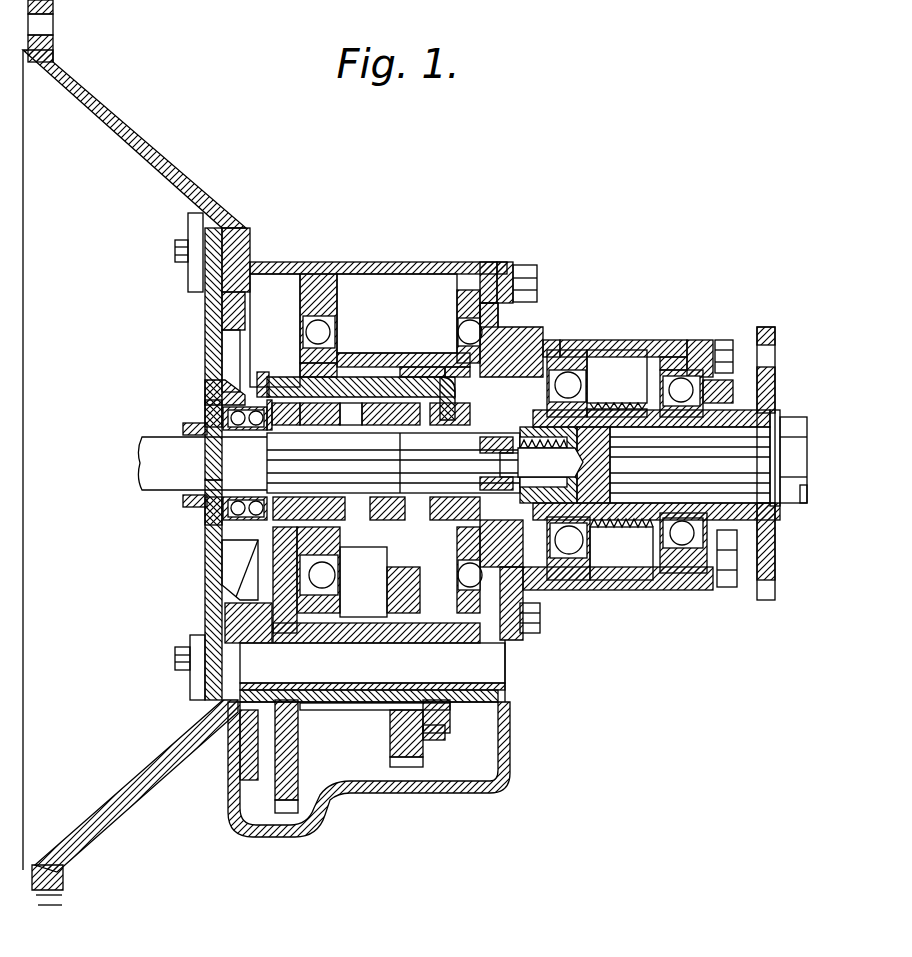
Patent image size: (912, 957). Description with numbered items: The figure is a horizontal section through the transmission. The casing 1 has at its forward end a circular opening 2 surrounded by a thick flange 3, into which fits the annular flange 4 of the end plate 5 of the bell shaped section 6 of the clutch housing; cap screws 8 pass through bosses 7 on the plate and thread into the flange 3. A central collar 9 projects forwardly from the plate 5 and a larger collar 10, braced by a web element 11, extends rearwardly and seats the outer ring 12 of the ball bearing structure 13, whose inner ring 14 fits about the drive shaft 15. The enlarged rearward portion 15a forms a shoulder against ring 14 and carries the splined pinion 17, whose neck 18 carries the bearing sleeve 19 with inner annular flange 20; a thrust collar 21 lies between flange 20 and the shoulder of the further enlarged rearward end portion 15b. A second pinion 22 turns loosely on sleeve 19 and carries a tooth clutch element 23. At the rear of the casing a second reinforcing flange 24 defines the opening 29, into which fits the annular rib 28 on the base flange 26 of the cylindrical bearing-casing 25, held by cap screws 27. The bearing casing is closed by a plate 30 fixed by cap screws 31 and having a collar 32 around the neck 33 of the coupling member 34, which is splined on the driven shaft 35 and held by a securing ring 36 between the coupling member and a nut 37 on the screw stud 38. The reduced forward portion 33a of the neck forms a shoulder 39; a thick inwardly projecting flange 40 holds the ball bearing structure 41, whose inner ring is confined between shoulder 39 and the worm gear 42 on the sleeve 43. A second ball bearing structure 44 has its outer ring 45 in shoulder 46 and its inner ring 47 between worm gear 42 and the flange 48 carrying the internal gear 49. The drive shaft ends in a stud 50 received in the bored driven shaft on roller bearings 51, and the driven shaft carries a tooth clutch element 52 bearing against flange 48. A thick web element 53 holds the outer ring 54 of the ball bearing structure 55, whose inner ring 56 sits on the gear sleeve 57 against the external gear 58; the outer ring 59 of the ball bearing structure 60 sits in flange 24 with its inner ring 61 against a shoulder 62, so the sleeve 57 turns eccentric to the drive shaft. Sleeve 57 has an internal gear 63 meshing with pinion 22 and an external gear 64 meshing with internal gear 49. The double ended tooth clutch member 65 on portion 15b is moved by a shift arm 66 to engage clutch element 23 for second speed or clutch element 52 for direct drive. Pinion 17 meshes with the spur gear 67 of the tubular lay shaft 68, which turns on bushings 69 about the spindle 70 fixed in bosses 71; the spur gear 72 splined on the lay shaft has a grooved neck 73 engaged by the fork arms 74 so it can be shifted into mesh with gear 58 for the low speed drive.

The casing 1 is at (380, 262).
The circular opening 2 is at (220, 297).
The thick flange 3 is at (245, 288).
The annular flange 4 is at (222, 331).
The end plate 5 is at (212, 610).
The bell shaped section 6 is at (118, 134).
The bosses 7 is at (193, 232).
The cap screws 8 is at (175, 248).
The central collar 9 is at (184, 501).
The larger collar 10 is at (208, 413).
The web element 11 is at (230, 558).
The outer ring 12 is at (212, 392).
The ball bearing structure 13 is at (240, 427).
The inner ring 14 is at (226, 508).
The drive shaft 15 is at (138, 463).
The rearward portion 15a is at (280, 463).
The rearward end portion 15b is at (402, 433).
The pinion 17 is at (265, 427).
The neck 18 is at (290, 425).
The bearing sleeve 19 is at (300, 408).
The inner annular flange 20 is at (350, 402).
The thrust collar 21 is at (372, 425).
The second pinion 22 is at (325, 425).
The tooth clutch element 23 is at (355, 412).
The second reinforcing flange 24 is at (476, 262).
The bearing-casing 25 is at (600, 340).
The base flange 26 is at (518, 340).
The cap screws 27 is at (527, 266).
The annular rib 28 is at (537, 292).
The opening 29 is at (460, 300).
The plate 30 is at (700, 340).
The cap screws 31 is at (722, 340).
The collar 32 is at (718, 395).
The neck 33 is at (725, 497).
The forward portion of neck 33a is at (640, 450).
The coupling member 34 is at (765, 330).
The driven shaft 35 is at (622, 527).
The securing ring 36 is at (776, 410).
The nut 37 is at (790, 500).
The screw stud 38 is at (790, 417).
The shoulder 39 is at (732, 560).
The inwardly projecting flange 40 is at (665, 357).
The ball bearing structure 41 is at (695, 574).
The worm gear 42 is at (617, 376).
The sleeve 43 is at (621, 553).
The second ball bearing structure 44 is at (583, 560).
The outer ring 45 is at (580, 590).
The shoulder 46 is at (592, 590).
The inner ring 47 is at (618, 403).
The flange 48 is at (565, 350).
The internal gear 49 is at (552, 342).
The stud 50 is at (518, 465).
The roller bearings 51 is at (550, 462).
The tooth clutch element 52 is at (500, 428).
The web element 53 is at (315, 274).
The outer ring 54 is at (275, 330).
The ball bearing structure 55 is at (318, 318).
The inner ring 56 is at (338, 300).
The gear sleeve 57 is at (405, 367).
The external gear 58 is at (346, 352).
The outer ring 59 is at (458, 320).
The ball bearing structure 60 is at (500, 268).
The inner ring 61 is at (452, 366).
The shoulder 62 is at (446, 377).
The internal gear 63 is at (308, 364).
The external gear 64 is at (508, 520).
The double ended tooth clutch member 65 is at (440, 426).
The shift arm 66 is at (261, 372).
The spur gear 67 is at (298, 752).
The tubular lay shaft 68 is at (348, 710).
The bushings 69 is at (395, 683).
The spindle 70 is at (505, 662).
The bosses 71 is at (485, 696).
The spur gear 72 is at (392, 742).
The grooved neck 73 is at (450, 724).
The arms 74 is at (420, 596).